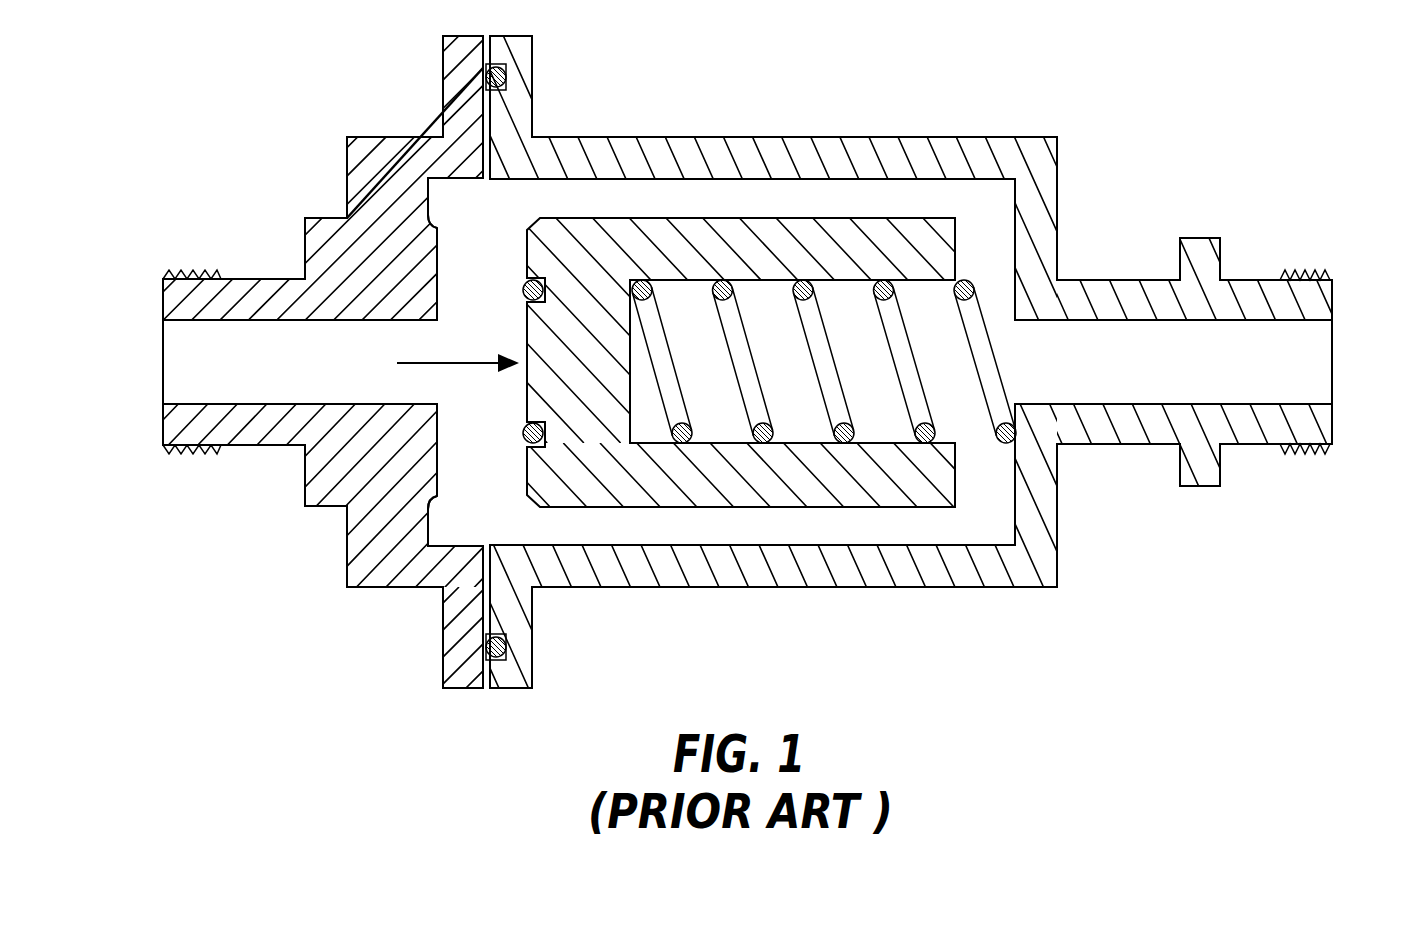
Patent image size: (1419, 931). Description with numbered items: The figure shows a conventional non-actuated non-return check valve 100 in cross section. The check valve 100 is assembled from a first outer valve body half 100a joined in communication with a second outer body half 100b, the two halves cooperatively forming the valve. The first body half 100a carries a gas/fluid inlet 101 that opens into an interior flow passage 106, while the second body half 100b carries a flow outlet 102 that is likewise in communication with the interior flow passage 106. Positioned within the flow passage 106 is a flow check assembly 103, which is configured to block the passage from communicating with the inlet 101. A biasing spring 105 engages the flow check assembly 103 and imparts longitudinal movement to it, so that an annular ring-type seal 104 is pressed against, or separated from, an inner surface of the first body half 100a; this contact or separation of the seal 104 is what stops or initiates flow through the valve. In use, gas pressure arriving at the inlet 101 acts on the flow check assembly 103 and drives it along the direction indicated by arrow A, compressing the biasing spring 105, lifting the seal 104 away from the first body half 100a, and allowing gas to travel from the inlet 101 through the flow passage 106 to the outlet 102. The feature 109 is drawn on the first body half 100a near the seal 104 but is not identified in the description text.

The check valve (prior art) 100 is at (761, 128).
The first housing body (inlet side) 100a is at (416, 144).
The second housing body (outlet side) 100b is at (585, 144).
The inlet 101 is at (233, 357).
The outlet 102 is at (1270, 358).
The piston / valve member 103 is at (536, 505).
The seal rings (O-rings) on piston 104 is at (524, 290).
The spring 105 is at (966, 283).
The chamber / flow passage 106 is at (835, 207).
The seat groove / notch in housing 109 is at (441, 253).